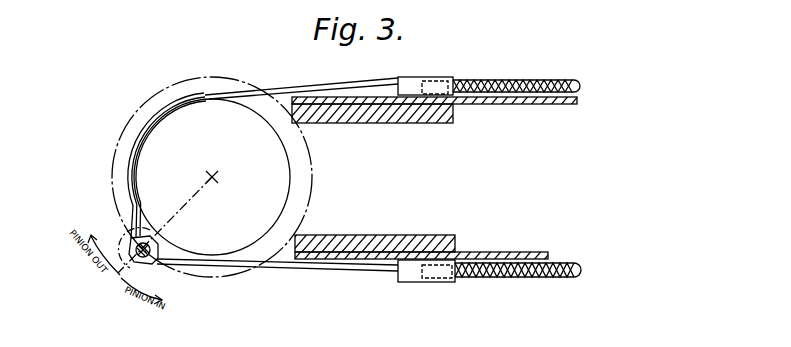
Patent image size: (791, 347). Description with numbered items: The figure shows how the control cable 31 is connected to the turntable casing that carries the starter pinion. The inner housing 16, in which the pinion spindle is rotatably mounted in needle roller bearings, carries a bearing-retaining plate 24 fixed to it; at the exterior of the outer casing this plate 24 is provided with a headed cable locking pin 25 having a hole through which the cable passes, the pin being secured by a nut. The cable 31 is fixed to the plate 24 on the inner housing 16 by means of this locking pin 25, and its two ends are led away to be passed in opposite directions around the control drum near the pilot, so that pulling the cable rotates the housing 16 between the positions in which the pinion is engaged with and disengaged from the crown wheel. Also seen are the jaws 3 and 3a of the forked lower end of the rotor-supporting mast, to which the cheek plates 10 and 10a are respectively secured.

The jaw 3 is at (350, 242).
The jaw 3a is at (378, 122).
The cheek plate 10 is at (494, 254).
The cheek plate 10a is at (517, 106).
The inner housing 16 is at (202, 146).
The bearing-retaining plate 24 is at (145, 122).
The cable locking pin 25 is at (152, 258).
The cable 31 is at (284, 94).